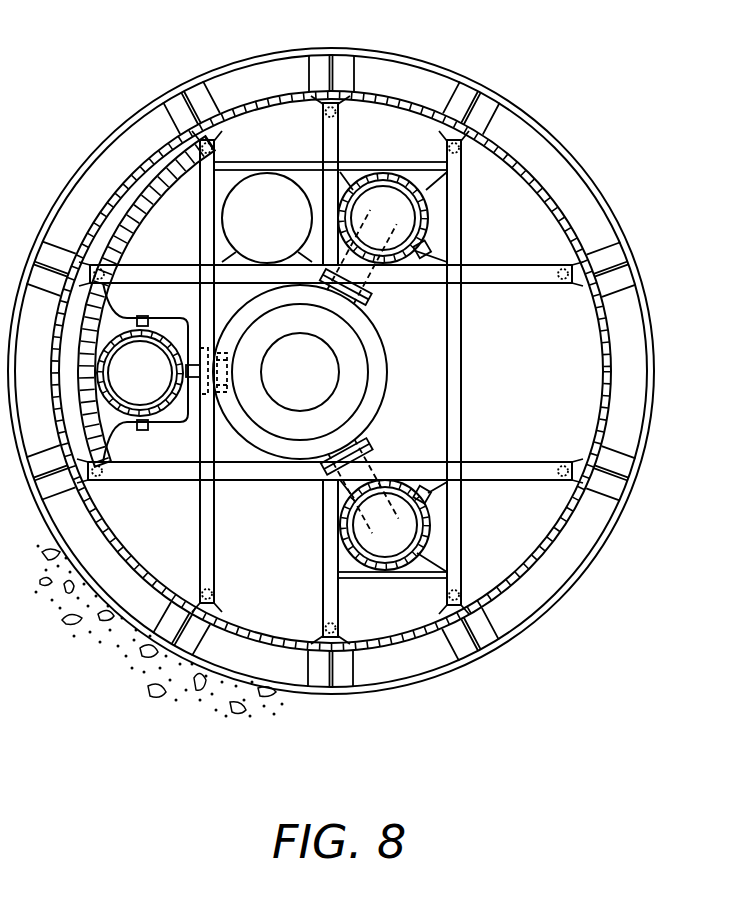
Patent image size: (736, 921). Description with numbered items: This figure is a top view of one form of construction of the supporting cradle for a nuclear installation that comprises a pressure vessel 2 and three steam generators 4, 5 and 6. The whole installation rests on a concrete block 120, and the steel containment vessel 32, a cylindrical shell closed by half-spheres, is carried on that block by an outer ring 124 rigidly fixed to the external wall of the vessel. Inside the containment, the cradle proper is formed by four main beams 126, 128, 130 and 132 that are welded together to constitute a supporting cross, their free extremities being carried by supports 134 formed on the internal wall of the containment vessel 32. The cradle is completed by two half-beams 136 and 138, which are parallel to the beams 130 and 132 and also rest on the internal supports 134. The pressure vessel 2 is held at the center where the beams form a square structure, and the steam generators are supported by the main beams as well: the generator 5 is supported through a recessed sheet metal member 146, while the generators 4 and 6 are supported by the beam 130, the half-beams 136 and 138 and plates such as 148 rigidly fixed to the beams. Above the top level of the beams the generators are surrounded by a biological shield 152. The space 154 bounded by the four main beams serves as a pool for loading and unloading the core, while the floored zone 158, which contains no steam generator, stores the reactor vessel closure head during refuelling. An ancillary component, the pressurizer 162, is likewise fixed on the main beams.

The pressure vessel 2 is at (354, 348).
The containment vessel 32 is at (118, 196).
The concrete block 120 is at (108, 673).
The outer ring 124 is at (530, 632).
The main beam 126 is at (526, 268).
The main beam 128 is at (510, 463).
The main beam 130 is at (452, 190).
The main beam 132 is at (204, 240).
The supports 134 is at (567, 532).
The half-beam 136 is at (330, 548).
The half-beam 138 is at (330, 135).
The lower bearing bracket 146 is at (175, 445).
The plate 148 is at (440, 498).
The biological shield 152 is at (112, 297).
The space 154 is at (435, 423).
The zone 158 is at (555, 387).
The pressurizer 162 is at (290, 229).
The steam generator 4 is at (383, 205).
The steam generator 5 is at (125, 376).
The steam generator 6 is at (386, 540).